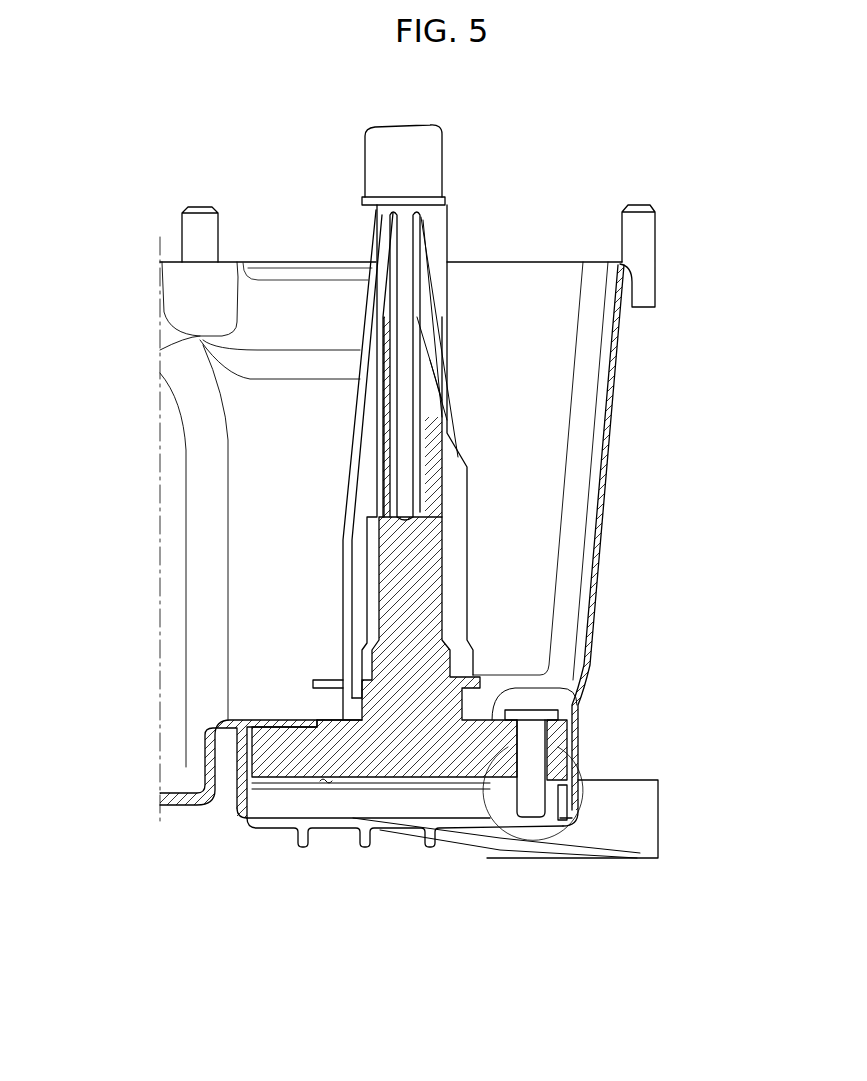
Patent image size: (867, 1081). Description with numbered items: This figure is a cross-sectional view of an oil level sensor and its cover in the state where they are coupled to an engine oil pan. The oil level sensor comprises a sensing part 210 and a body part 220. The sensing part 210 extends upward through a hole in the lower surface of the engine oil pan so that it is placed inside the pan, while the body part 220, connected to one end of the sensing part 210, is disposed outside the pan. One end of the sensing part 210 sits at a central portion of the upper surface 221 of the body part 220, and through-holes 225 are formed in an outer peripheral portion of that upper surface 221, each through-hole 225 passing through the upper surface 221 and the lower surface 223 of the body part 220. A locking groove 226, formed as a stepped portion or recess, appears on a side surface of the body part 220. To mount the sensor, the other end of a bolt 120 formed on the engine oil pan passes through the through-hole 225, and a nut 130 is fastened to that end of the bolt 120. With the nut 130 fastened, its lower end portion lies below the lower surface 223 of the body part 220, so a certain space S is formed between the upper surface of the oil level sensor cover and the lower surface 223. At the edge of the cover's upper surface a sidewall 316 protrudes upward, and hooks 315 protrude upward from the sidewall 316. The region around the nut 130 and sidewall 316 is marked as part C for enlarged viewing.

The bolt 120 is at (530, 796).
The nut 130 is at (577, 793).
The sensing part 210 is at (417, 562).
The body part 220 is at (402, 750).
The upper surface 221 is at (300, 720).
The lower surface 223 is at (295, 777).
The through-hole 225 is at (566, 748).
The locking groove 226 is at (247, 720).
The hook 315 is at (245, 758).
The sidewall 316 is at (238, 821).
The space S is at (329, 790).
The part C is at (558, 832).